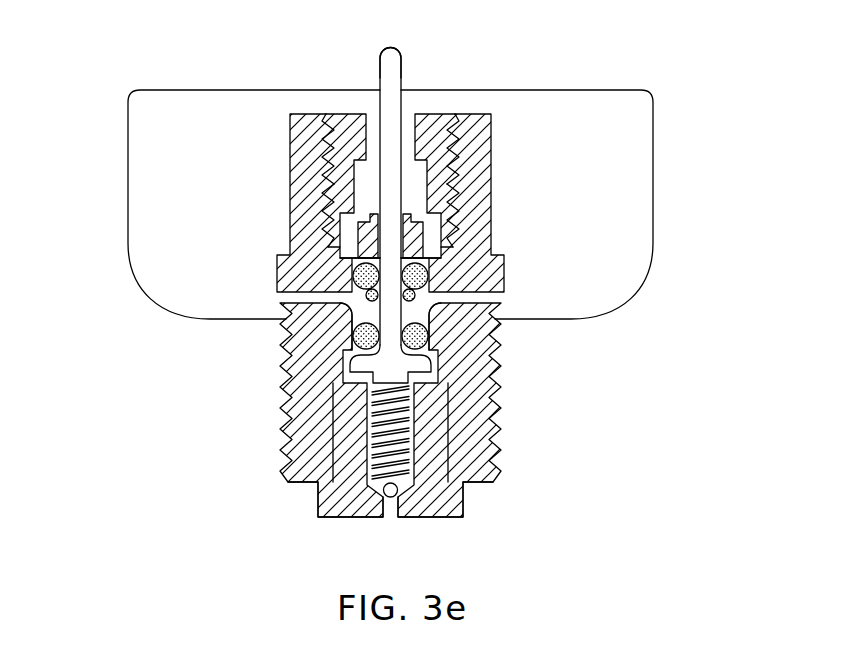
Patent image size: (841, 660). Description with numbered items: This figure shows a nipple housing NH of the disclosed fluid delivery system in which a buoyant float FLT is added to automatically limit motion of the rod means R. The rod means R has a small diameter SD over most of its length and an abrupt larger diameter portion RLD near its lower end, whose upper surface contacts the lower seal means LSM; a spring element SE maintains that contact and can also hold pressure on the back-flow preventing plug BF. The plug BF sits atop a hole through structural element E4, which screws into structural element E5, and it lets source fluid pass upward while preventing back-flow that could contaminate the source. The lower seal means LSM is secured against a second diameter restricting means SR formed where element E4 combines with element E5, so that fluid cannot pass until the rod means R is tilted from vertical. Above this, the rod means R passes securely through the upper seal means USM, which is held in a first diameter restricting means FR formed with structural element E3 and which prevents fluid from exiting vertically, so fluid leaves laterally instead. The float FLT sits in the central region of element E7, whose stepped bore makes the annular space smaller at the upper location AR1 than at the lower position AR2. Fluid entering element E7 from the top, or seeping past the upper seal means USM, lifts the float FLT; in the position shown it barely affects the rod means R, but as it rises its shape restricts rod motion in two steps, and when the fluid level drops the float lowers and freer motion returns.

The small diameter SD is at (378, 68).
The rod means R is at (406, 65).
The element E7 is at (436, 134).
The annular space at upper location AR1 is at (373, 146).
The annular space at lower position AR2 is at (363, 192).
The float FLT is at (429, 223).
The first diameter restricting means FR is at (431, 251).
The upper seal means USM is at (449, 278).
The structural element E3 is at (311, 231).
The second diameter restricting means SR is at (348, 334).
The larger diameter portion of rod means RLD is at (350, 363).
The lower seal means LSM is at (436, 341).
The structural element E5 is at (477, 413).
The spring element SE is at (414, 449).
The nipple housing NH is at (349, 439).
The back-flow preventing plug BF is at (386, 495).
The structural element E4 is at (438, 510).